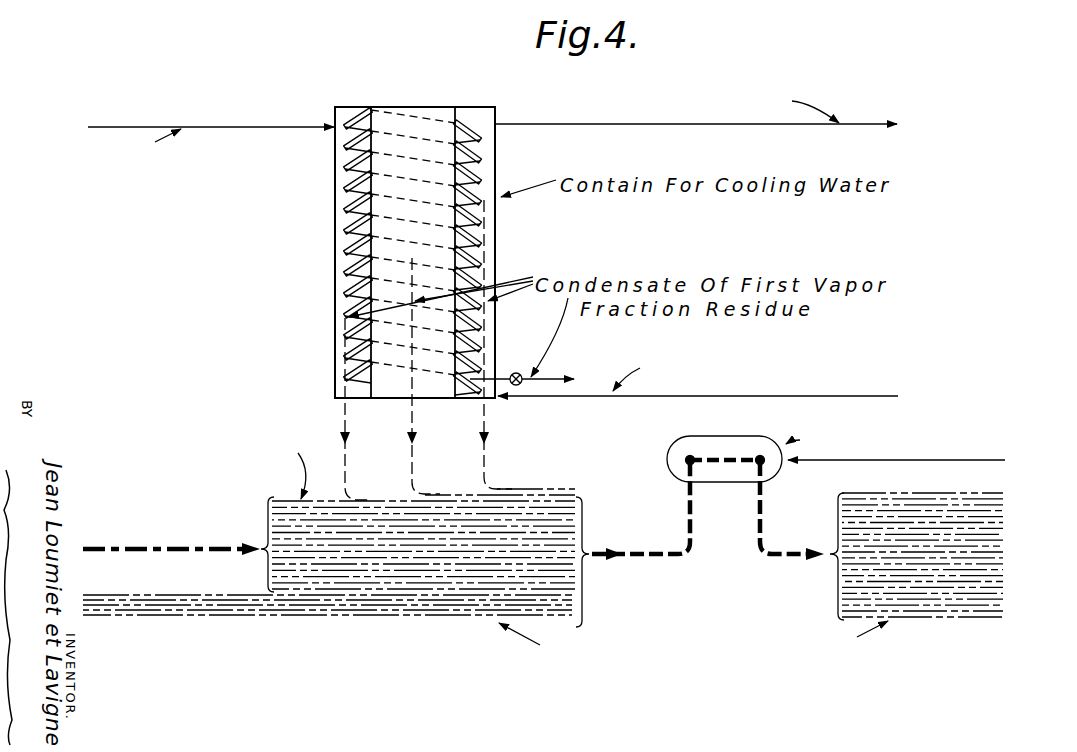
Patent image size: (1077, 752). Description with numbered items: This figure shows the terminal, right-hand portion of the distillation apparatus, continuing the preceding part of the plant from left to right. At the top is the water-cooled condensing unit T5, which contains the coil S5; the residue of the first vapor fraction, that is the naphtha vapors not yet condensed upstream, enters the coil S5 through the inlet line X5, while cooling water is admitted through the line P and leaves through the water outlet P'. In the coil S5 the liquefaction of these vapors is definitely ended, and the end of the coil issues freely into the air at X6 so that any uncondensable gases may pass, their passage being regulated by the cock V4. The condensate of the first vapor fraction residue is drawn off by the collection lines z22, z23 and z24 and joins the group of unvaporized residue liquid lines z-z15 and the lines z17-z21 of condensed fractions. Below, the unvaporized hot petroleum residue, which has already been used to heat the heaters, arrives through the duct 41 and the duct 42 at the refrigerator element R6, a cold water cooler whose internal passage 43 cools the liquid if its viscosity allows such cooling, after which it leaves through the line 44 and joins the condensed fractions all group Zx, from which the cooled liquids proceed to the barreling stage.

The condenser T5 is at (421, 107).
The coil S5 is at (360, 386).
The residue of first vapor fraction inlet line X5 is at (316, 126).
The water outlet line P' is at (696, 105).
The cock V4 is at (519, 372).
The free outlet to the air X6 is at (524, 365).
The cooling water inlet line P is at (700, 389).
The condensate fraction line z22 is at (362, 498).
The condensate fraction line z23 is at (433, 495).
The condensate fraction line z24 is at (505, 489).
The unvaporized residue liquid fractions group z-z15 is at (257, 522).
The condensed fractions group z17-z21 is at (204, 622).
The duct 41 is at (151, 548).
The refrigerator element R6 is at (731, 436).
The duct 42 is at (680, 548).
The cooler coil 43 is at (745, 464).
The cooler outlet line 44 is at (776, 551).
The condensed fractions all group Zx is at (944, 565).